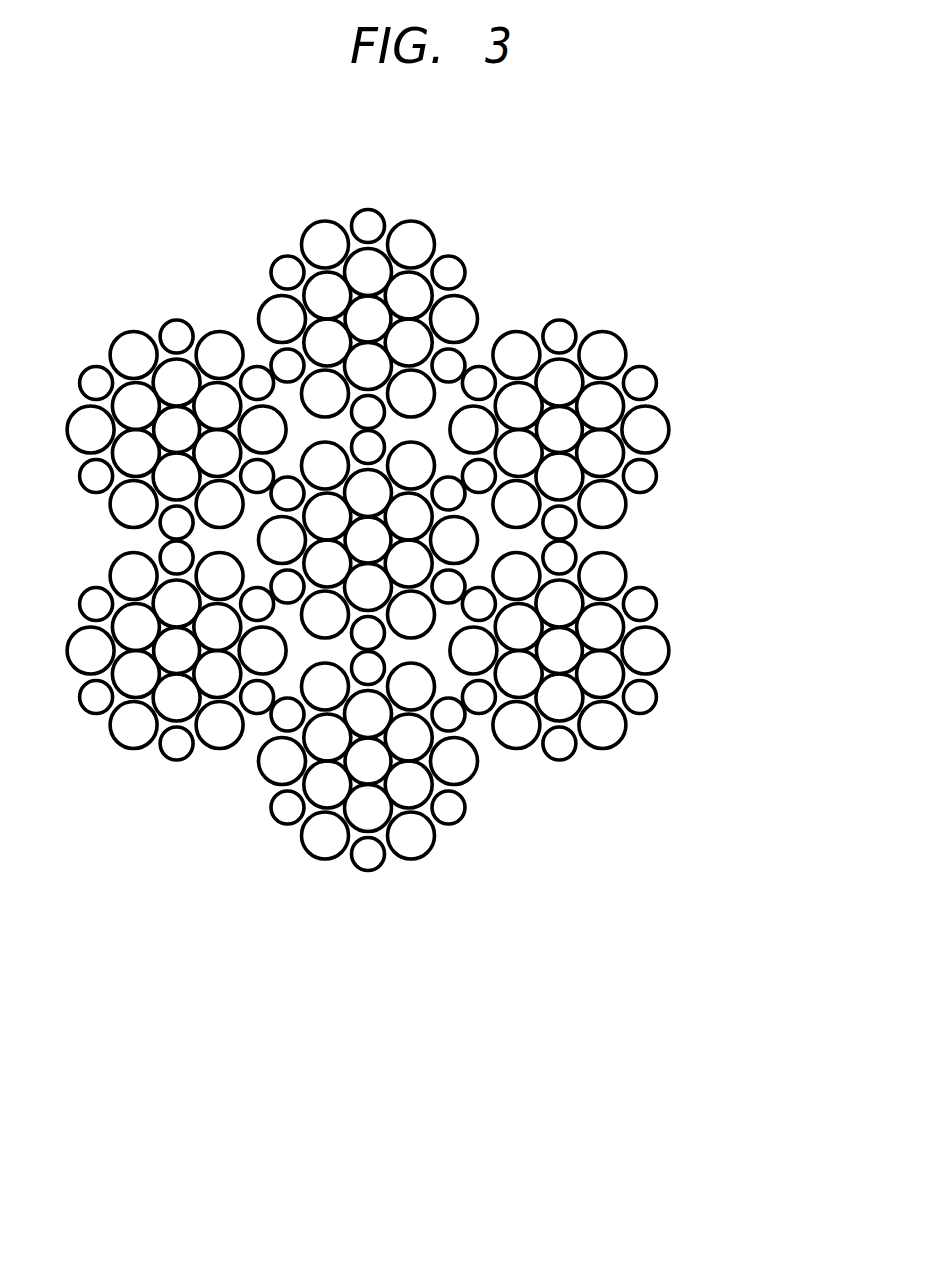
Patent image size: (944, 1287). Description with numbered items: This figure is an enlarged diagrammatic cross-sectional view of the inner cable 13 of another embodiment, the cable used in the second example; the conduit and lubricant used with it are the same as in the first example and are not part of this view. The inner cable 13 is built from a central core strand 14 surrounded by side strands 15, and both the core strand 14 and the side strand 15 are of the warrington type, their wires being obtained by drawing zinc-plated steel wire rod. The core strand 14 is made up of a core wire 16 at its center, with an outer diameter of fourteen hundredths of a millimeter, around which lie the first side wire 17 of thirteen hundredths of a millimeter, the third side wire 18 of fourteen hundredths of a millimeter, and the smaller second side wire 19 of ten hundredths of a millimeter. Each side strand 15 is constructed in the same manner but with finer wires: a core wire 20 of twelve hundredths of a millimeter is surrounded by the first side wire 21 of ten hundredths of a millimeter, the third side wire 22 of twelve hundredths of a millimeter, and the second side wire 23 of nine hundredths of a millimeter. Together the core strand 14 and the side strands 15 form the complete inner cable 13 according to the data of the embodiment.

The inner cable 13 is at (432, 660).
The core strand 14 is at (528, 407).
The side strand 15 is at (433, 843).
The core wire of the core strand 16 is at (362, 527).
The first side wire of the core strand 17 is at (412, 562).
The third side wire of the core strand 18 is at (413, 618).
The second side wire of the core strand 19 is at (447, 585).
The core wire of the side strand 20 is at (385, 766).
The first side wire of the side strand 21 is at (420, 783).
The third side wire of the side strand 22 is at (405, 842).
The second side wire of the side strand 23 is at (442, 812).